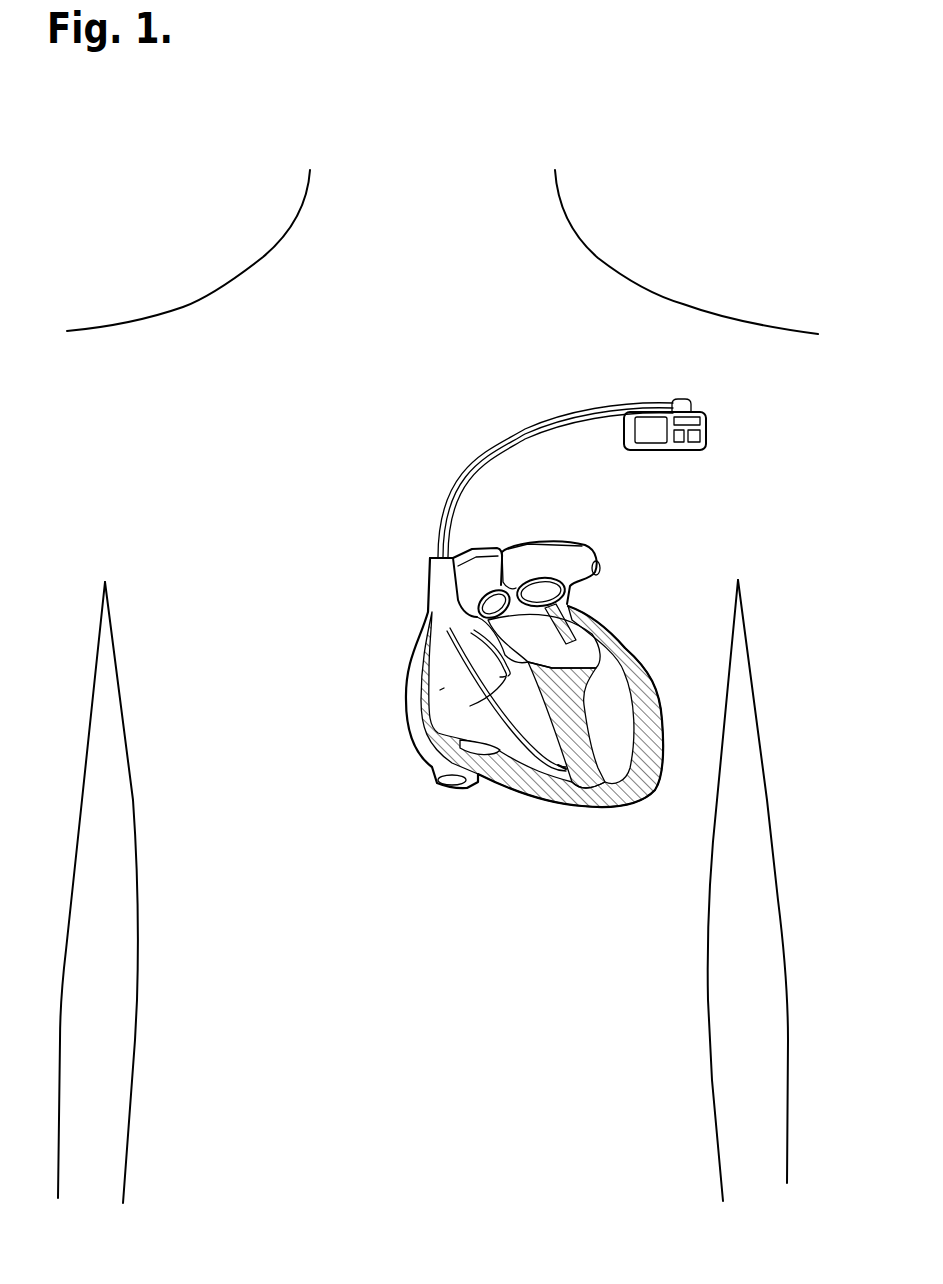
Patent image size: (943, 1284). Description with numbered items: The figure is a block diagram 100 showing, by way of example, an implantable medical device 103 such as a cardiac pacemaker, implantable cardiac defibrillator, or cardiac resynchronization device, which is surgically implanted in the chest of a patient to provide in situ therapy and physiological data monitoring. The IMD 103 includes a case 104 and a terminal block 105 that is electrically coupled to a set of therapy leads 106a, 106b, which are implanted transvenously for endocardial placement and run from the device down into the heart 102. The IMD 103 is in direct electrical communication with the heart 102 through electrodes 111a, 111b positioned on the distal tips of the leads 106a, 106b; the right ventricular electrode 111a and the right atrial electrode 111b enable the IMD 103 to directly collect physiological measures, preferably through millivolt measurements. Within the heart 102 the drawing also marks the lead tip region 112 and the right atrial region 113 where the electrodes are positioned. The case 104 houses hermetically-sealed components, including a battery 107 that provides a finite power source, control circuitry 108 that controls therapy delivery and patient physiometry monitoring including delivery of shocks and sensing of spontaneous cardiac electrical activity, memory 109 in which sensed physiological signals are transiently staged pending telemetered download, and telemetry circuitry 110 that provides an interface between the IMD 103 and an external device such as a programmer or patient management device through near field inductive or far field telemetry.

The block diagram 100 is at (178, 232).
The heart 102 is at (412, 650).
The implantable medical device 103 is at (624, 432).
The case 104 is at (707, 434).
The terminal block 105 is at (687, 399).
The therapy lead 106a is at (507, 437).
The therapy lead 106b is at (508, 454).
The battery 107 is at (649, 443).
The control circuitry 108 is at (679, 442).
The memory 109 is at (694, 442).
The telemetry circuitry 110 is at (697, 421).
The right ventricular electrode 111a is at (562, 775).
The right atrial electrode 111b is at (470, 706).
The electrode 112 is at (537, 772).
The right atrium 113 is at (450, 684).